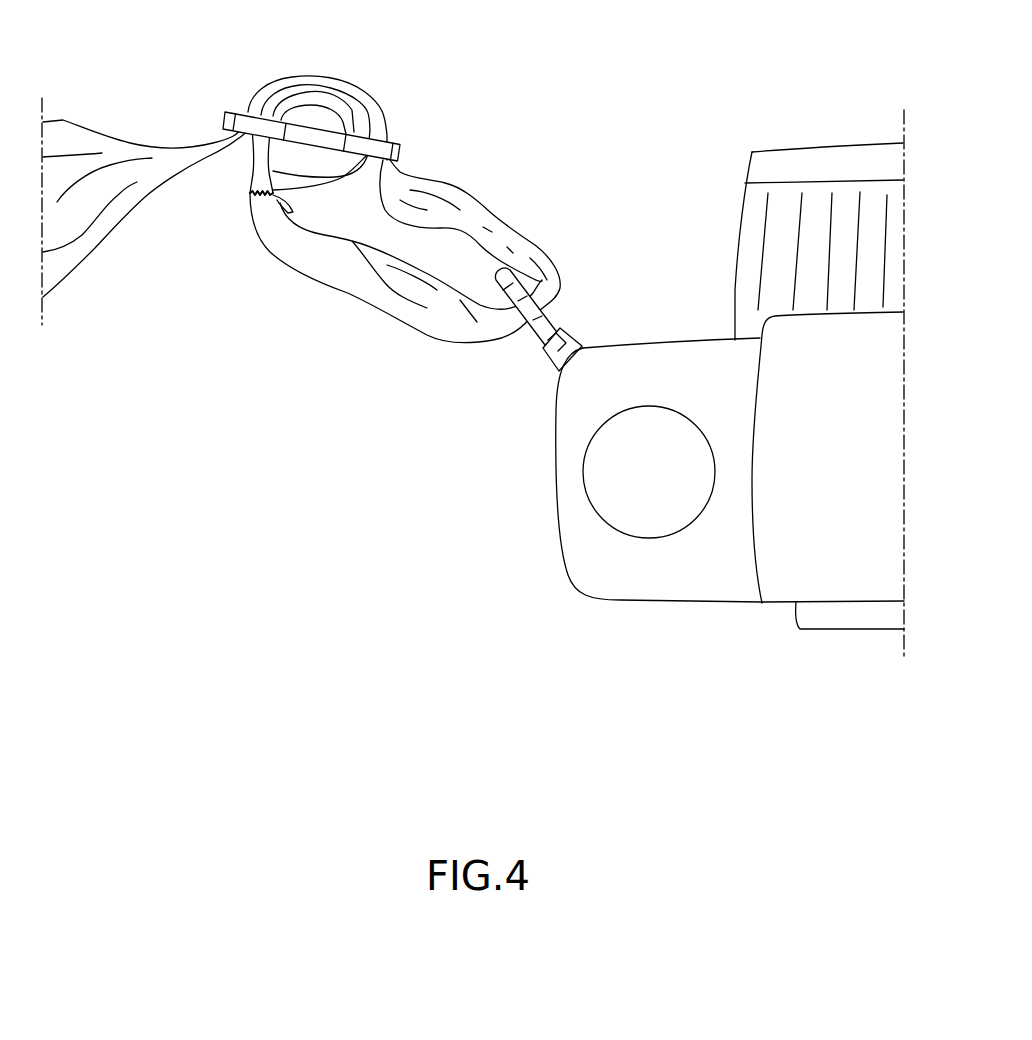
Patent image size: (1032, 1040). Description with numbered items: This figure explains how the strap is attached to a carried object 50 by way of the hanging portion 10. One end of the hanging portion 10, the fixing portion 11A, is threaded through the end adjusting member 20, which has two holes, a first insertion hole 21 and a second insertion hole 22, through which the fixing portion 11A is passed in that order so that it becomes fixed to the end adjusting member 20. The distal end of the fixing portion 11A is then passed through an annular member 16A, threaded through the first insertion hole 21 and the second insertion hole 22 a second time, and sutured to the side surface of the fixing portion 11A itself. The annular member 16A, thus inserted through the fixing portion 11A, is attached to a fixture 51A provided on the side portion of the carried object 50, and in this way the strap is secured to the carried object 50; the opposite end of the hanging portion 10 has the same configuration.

The hanging portion 10 is at (102, 133).
The fixing portion 11A is at (258, 253).
The end adjusting member 20 is at (325, 127).
The first insertion hole 21 is at (253, 111).
The second insertion hole 22 is at (387, 122).
The annular member 16A is at (552, 316).
The fixture 51A is at (568, 333).
The carried object 50 is at (692, 603).